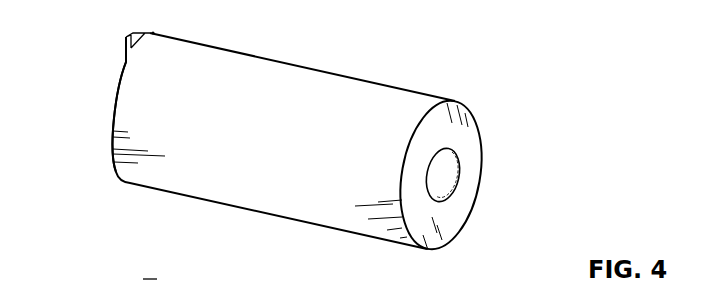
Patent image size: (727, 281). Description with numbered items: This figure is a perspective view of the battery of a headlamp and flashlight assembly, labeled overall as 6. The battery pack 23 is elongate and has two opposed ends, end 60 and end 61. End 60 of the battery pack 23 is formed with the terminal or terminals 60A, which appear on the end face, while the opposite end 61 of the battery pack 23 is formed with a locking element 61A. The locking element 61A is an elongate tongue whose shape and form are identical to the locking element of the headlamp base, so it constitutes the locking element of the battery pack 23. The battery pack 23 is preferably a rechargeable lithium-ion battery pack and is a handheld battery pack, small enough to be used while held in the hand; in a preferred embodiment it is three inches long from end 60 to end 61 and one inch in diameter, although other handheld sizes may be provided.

The roller assembly 6 is at (346, 58).
The battery pack 23 is at (378, 83).
The end 60 is at (468, 137).
The terminal 60A is at (450, 175).
The end 61 is at (110, 112).
The locking element 61A is at (124, 47).